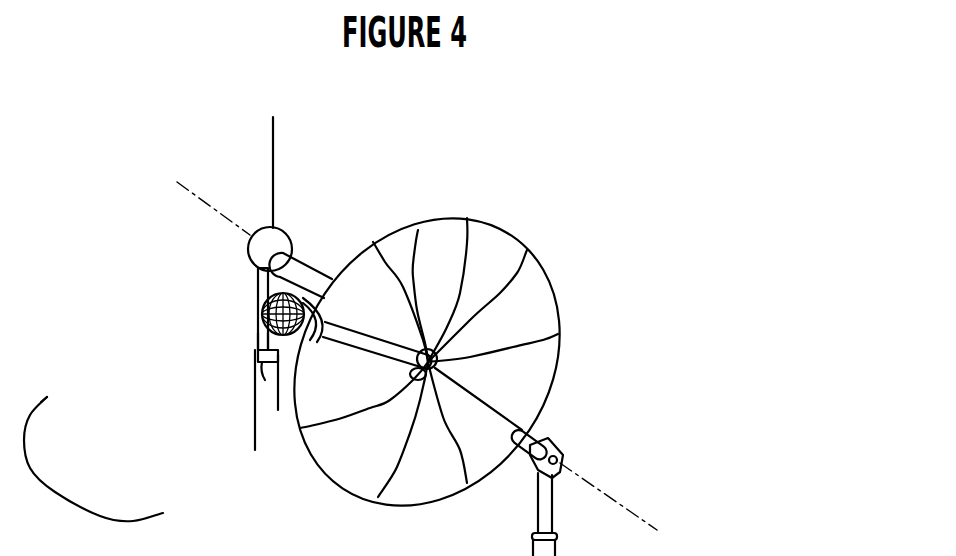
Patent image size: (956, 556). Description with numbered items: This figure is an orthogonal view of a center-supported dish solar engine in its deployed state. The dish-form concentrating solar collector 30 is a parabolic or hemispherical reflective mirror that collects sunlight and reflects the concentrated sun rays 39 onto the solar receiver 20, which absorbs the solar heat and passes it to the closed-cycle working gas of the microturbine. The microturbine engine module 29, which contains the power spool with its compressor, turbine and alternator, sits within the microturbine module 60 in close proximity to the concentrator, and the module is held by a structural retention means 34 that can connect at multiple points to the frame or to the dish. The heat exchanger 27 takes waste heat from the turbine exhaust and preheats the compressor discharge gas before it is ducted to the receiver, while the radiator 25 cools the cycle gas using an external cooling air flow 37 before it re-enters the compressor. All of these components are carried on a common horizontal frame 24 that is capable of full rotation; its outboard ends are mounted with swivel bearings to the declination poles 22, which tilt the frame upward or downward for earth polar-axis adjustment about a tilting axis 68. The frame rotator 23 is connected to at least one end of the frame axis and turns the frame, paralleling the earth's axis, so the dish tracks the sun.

The solar receiver 20 is at (283, 397).
The declination poles 22 is at (273, 283).
The frame rotator 23 is at (273, 117).
The horizontal frame 24 is at (310, 267).
The radiator 25 is at (257, 333).
The heat exchanger 27 is at (305, 345).
The microturbine engine module 29 is at (295, 332).
The solar concentrator 30 is at (497, 232).
The structural retention means 34 is at (418, 232).
The external cooling air flow 37 is at (248, 311).
The concentrated sun rays 39 is at (342, 370).
The microturbine module 60 is at (65, 498).
The tilting axis 68 is at (493, 263).